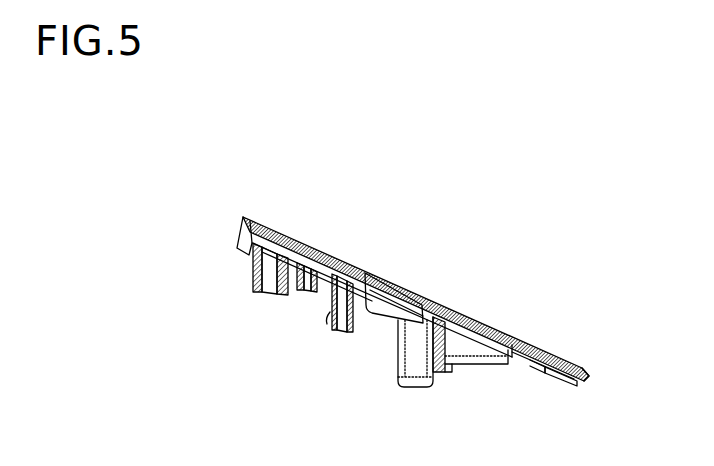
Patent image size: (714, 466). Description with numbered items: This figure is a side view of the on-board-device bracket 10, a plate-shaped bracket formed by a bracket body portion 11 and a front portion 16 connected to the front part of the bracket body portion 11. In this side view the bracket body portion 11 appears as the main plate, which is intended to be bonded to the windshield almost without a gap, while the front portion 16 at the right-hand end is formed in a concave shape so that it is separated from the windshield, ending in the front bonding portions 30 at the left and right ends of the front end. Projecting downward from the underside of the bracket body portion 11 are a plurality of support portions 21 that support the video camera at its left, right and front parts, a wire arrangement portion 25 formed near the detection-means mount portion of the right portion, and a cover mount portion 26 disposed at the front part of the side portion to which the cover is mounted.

The on-board-device bracket 10 is at (232, 166).
The bracket body portion 11 is at (278, 220).
The front portion 16 is at (594, 378).
The support portions 21 is at (418, 382).
The wire arrangement portion 25 is at (330, 316).
The cover mount portion 26 is at (473, 350).
The front bonding portions 30 is at (548, 364).